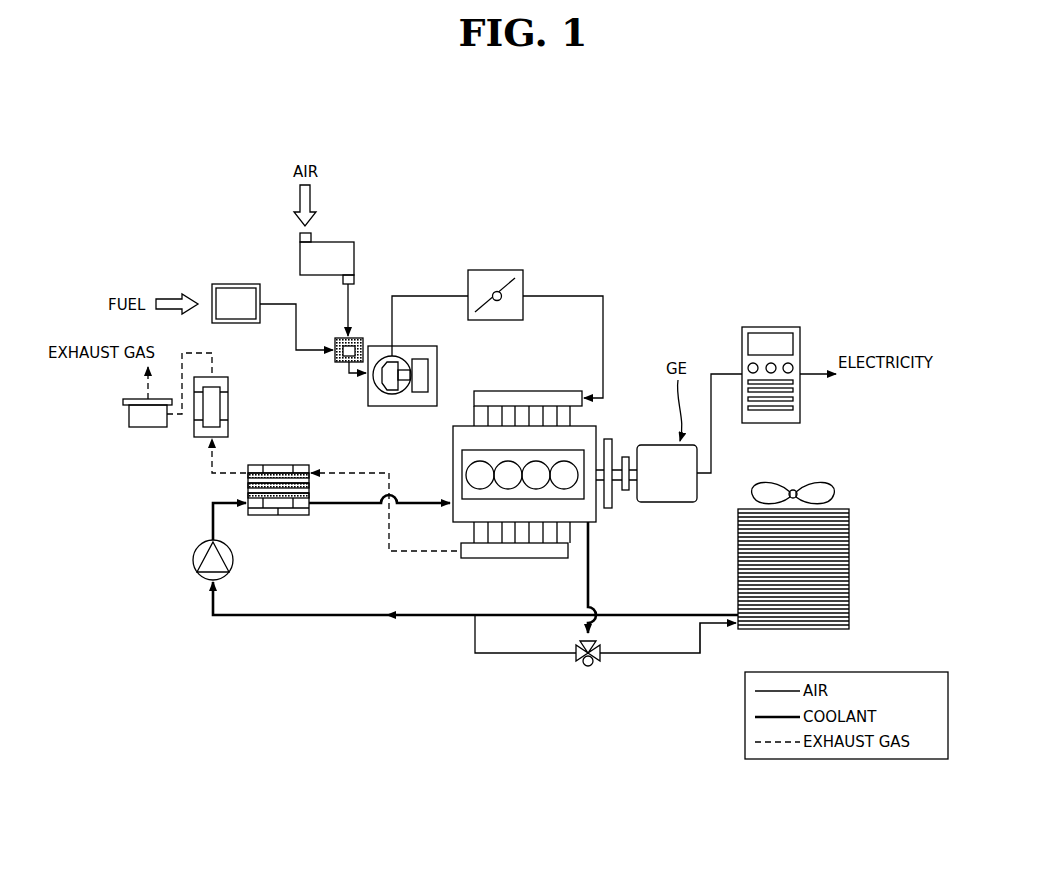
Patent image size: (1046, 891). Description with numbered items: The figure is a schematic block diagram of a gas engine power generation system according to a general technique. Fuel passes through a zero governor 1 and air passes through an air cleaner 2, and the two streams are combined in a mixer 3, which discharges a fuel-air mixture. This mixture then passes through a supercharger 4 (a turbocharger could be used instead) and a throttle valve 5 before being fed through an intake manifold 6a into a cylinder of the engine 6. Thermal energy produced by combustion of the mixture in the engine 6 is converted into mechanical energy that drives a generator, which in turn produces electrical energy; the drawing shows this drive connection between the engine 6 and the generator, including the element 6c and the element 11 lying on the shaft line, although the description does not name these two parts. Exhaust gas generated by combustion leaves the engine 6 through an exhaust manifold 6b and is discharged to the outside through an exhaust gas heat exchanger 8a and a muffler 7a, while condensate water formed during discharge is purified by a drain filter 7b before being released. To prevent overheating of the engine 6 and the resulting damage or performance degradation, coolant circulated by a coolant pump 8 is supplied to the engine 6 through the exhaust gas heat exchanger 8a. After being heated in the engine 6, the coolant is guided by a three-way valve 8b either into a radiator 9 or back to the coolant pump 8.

The zero governor 1 is at (233, 284).
The air cleaner 2 is at (338, 242).
The mixer 3 is at (343, 362).
The supercharger 4 is at (443, 350).
The throttle valve 5 is at (495, 270).
The engine 6 is at (587, 426).
The intake manifold 6a is at (510, 391).
The exhaust manifold 6b is at (487, 558).
The flywheel 6c is at (612, 508).
The muffler 7a is at (228, 384).
The drain filter 7b is at (140, 427).
The coolant pump 8 is at (193, 558).
The exhaust gas heat exchanger 8a is at (280, 465).
The 3-way valve 8b is at (592, 665).
The radiator 9 is at (849, 558).
The coupling 11 is at (622, 457).